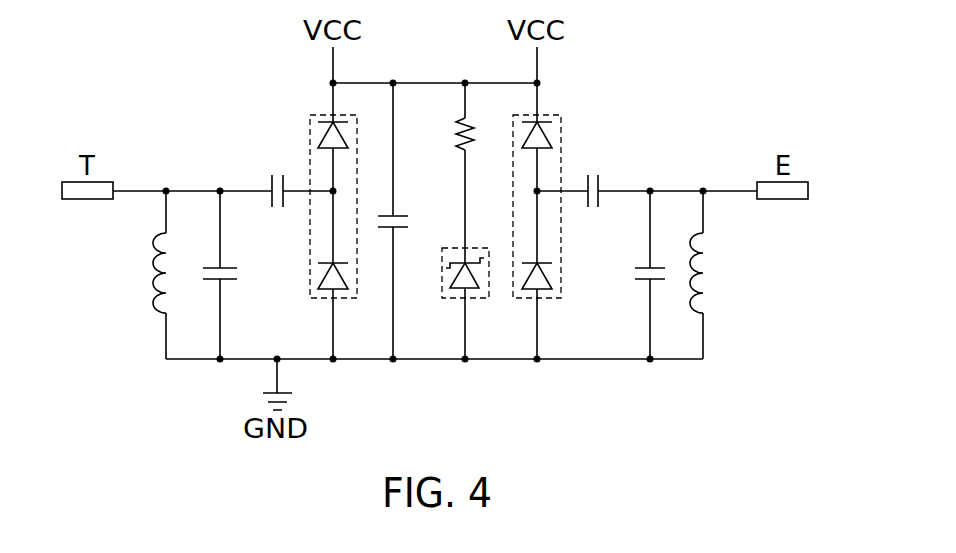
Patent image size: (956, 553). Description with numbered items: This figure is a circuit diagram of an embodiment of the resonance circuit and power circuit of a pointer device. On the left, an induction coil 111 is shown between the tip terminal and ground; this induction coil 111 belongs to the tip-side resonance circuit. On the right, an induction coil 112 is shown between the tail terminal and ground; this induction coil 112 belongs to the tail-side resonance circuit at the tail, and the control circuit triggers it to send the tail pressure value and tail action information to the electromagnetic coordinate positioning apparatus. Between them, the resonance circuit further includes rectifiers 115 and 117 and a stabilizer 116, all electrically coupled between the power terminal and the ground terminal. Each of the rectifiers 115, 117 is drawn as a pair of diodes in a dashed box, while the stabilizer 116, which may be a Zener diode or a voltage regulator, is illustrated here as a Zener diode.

The induction coil 111 is at (152, 266).
The induction coil 112 is at (706, 284).
The rectifier 115 is at (310, 146).
The stabilizer 116 is at (489, 283).
The rectifier 117 is at (561, 135).